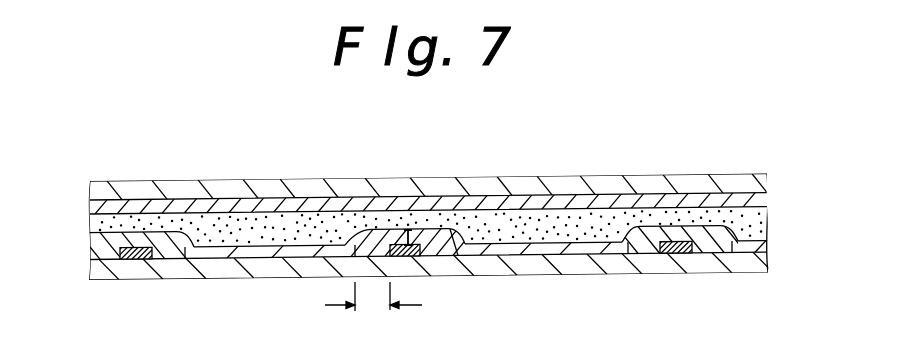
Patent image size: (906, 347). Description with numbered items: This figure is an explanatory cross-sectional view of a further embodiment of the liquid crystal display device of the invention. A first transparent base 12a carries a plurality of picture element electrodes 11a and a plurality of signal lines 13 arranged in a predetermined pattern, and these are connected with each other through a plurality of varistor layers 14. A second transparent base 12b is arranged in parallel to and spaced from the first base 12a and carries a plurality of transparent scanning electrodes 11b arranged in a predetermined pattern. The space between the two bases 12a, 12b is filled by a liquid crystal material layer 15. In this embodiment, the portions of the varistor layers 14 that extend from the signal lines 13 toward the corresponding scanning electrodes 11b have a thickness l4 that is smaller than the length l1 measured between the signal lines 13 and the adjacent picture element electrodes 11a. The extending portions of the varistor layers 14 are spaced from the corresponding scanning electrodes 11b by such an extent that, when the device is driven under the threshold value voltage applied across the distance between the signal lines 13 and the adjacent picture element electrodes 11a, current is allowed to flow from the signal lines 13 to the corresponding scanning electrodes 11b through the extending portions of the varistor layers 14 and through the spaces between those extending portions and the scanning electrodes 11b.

The picture element electrode 11a is at (245, 265).
The transparent scanning electrode 11b is at (487, 200).
The first transparent base 12a is at (140, 270).
The second transparent base 12b is at (338, 196).
The signal line 13 is at (418, 258).
The varistor layer 14 is at (458, 258).
The liquid crystal material layer 15 is at (583, 226).
The length between signal lines and adjacent picture element electrodes l1 is at (388, 300).
The thickness of extending portions of varistor layers l4 is at (413, 230).